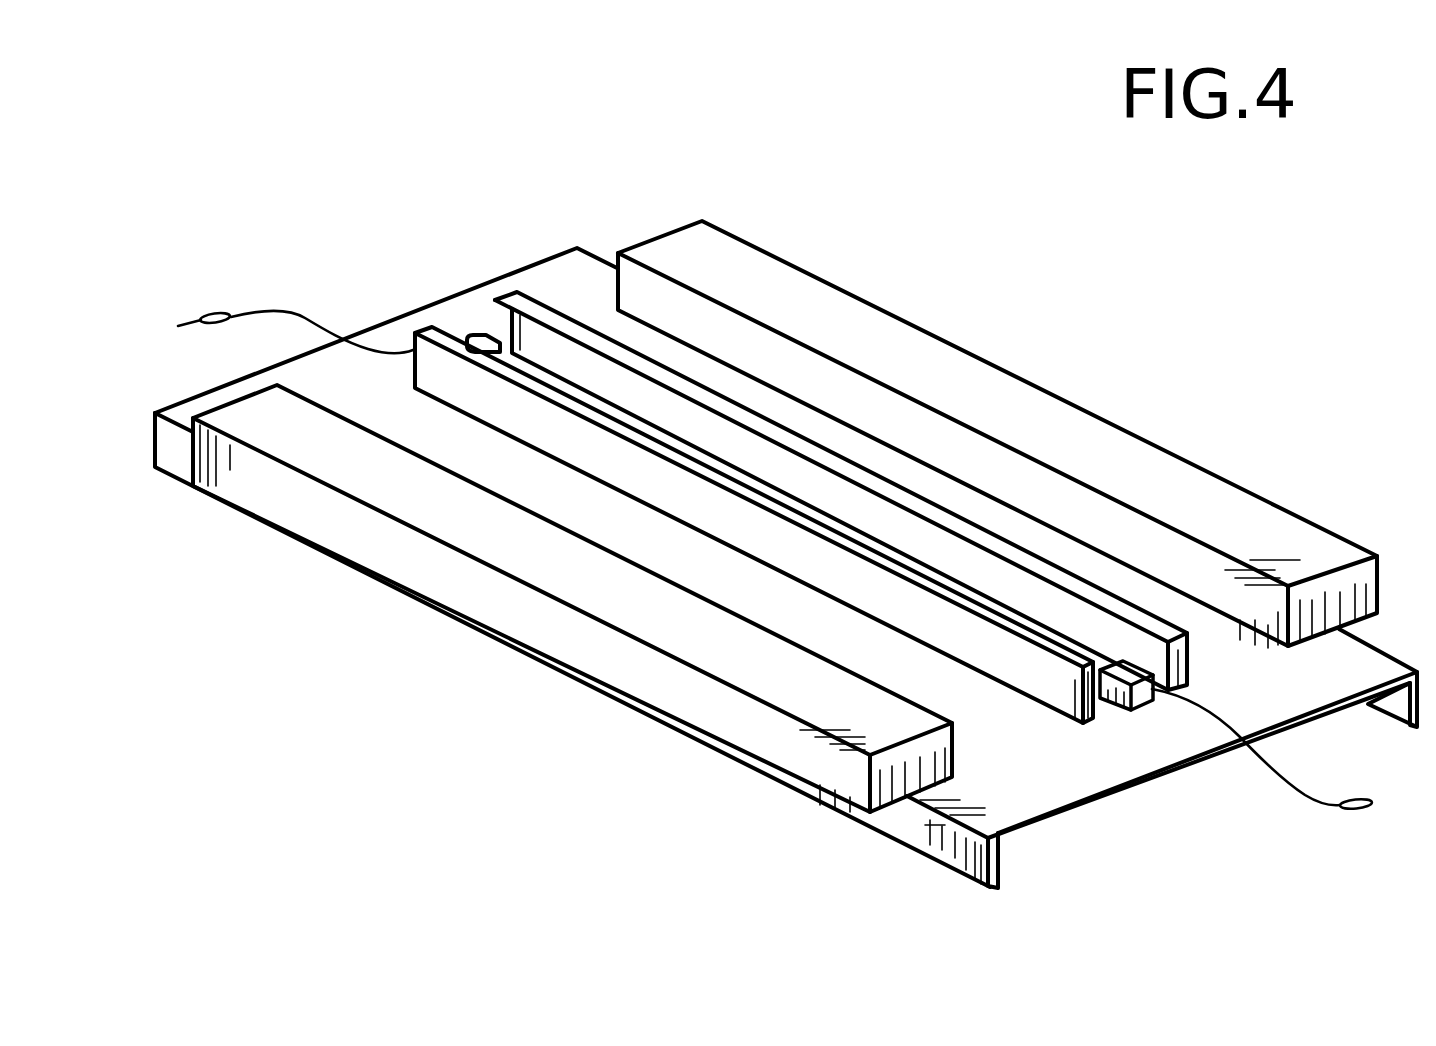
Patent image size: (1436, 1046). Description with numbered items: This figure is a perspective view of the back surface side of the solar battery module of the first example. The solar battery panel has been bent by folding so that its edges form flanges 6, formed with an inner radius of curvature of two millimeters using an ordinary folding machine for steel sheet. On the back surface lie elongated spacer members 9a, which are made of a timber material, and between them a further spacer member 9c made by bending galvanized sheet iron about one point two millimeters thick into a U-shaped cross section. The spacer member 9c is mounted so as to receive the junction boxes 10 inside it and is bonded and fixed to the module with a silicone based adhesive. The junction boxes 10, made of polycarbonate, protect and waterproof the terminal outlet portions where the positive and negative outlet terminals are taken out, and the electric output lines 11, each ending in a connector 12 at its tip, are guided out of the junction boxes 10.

The flange 6 is at (908, 835).
The spacer member 9a is at (1050, 418).
The spacer member 9c is at (800, 478).
The junction box 10 is at (1117, 712).
The electric output line 11 is at (249, 311).
The connector 12 is at (212, 308).